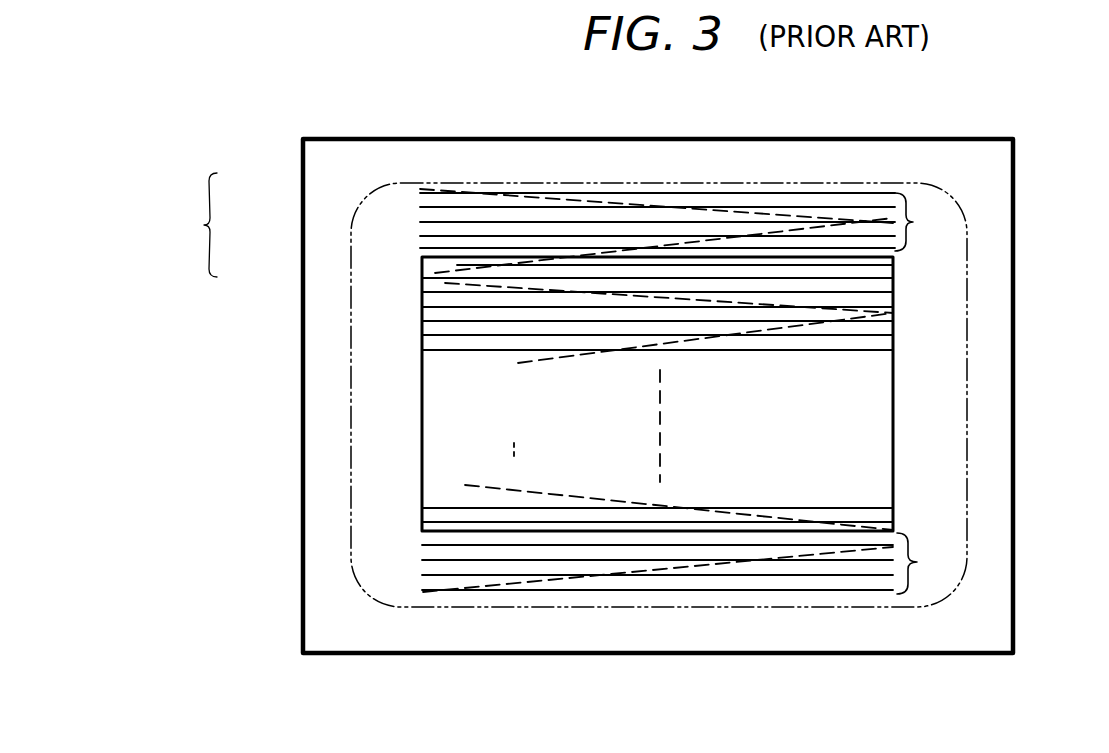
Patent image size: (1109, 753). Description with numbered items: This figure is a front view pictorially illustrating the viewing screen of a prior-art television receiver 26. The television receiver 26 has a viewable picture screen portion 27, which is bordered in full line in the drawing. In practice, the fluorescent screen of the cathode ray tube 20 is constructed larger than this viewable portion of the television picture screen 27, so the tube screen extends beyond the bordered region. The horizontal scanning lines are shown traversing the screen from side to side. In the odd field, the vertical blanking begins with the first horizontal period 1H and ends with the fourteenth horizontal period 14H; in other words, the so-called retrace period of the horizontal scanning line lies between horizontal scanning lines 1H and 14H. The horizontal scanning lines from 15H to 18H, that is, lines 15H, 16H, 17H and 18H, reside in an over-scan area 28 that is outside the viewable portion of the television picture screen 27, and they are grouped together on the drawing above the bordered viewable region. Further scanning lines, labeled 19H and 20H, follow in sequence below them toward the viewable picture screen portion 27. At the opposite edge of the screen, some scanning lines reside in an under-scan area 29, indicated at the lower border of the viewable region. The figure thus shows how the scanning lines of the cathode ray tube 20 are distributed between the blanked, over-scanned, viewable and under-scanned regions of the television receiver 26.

The television receiver 26 is at (684, 138).
The cathode ray tube 20 is at (966, 322).
The viewable picture screen portion 27 is at (894, 407).
The 14th horizontal period 14H is at (833, 218).
The 1st horizontal period 1H is at (819, 530).
The over-scan area 28 is at (913, 222).
The under-scan area 29 is at (917, 562).
The horizontal scanning line 15H is at (463, 192).
The horizontal scanning line 16H is at (447, 207).
The horizontal scanning line 17H is at (445, 222).
The horizontal scanning line 18H is at (445, 236).
The fifth conductor 19H is at (445, 248).
The sixth conductor 20H is at (457, 265).